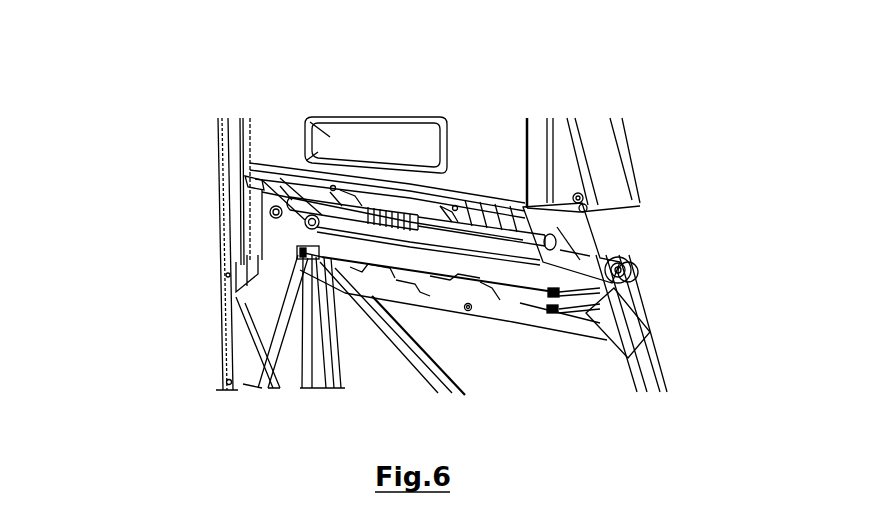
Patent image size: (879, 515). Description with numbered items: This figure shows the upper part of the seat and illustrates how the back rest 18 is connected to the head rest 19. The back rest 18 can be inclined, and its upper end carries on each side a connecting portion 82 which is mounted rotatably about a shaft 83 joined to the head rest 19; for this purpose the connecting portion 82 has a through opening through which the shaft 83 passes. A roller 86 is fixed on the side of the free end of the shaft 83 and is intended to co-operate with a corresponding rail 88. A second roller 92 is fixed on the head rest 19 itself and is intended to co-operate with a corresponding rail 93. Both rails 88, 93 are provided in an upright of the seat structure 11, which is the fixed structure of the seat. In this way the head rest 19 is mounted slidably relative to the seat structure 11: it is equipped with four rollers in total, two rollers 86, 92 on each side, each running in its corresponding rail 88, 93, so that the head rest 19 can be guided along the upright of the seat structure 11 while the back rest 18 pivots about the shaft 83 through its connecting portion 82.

The seat structure 11 is at (250, 357).
The back rest 18 is at (583, 368).
The head rest 19 is at (497, 153).
The connecting portion 82 is at (553, 323).
The shaft 83 is at (612, 243).
The roller 86 is at (263, 231).
The rail 88 is at (272, 227).
The second roller 92 is at (247, 178).
The rail 93 is at (246, 178).